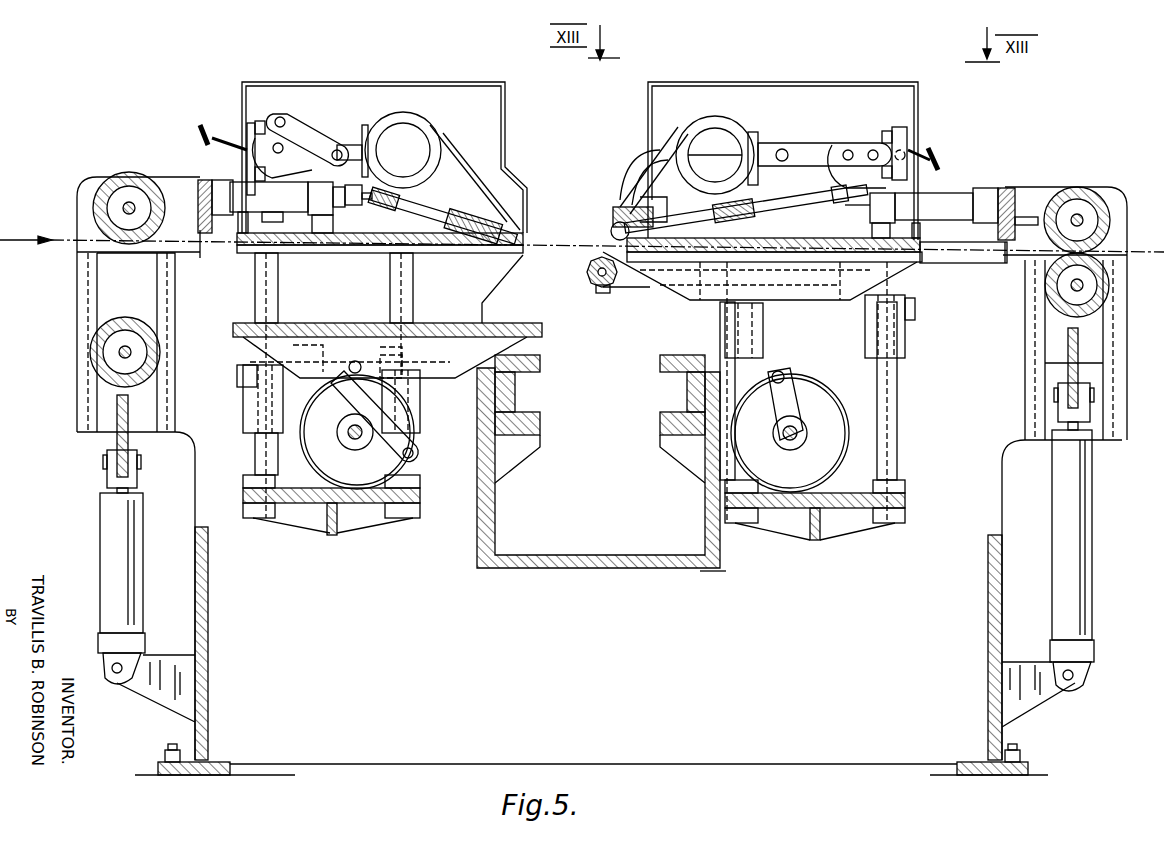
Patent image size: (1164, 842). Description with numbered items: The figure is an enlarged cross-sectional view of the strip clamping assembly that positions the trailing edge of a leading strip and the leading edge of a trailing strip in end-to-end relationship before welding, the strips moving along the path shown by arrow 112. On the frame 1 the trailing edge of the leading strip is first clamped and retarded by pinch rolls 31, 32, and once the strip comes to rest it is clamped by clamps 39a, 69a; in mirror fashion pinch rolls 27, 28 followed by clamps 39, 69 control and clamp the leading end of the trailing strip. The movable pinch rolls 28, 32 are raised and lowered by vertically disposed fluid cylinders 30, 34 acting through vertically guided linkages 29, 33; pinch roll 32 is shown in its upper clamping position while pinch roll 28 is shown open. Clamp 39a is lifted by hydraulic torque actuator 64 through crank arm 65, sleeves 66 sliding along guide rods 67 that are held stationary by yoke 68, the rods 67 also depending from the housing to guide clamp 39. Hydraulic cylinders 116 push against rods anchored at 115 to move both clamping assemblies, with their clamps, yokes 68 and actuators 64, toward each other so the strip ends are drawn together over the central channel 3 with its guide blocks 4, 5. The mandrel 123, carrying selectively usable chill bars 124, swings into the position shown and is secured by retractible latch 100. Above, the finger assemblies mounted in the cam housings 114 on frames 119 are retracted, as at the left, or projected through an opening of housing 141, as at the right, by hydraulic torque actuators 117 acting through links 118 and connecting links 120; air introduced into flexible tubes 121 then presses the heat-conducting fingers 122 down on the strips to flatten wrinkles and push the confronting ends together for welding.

The frame 1 is at (208, 604).
The channel 3 is at (662, 570).
The left guide 4 is at (541, 424).
The right guide 5 is at (660, 424).
The pinch roll 27 is at (133, 175).
The movable pinch roll 28 is at (88, 365).
The linkage 29 is at (107, 440).
The fluid cylinder 30 is at (138, 550).
The pinch roll 31 is at (1080, 188).
The movable pinch roll 32 is at (1110, 285).
The linkage 33 is at (1080, 375).
The fluid cylinder 34 is at (1090, 580).
The clamp 39 is at (428, 323).
The clamp 39a is at (668, 298).
The hydraulic torque actuator 64 is at (300, 452).
The crank arm 65 is at (418, 420).
The sliding sleeve 66 is at (243, 402).
The guide rod 67 is at (255, 290).
The yoke 68 is at (884, 548).
The clamp 69 is at (428, 255).
The clamp 69a is at (697, 250).
The retractible latch 100 is at (520, 380).
The arrow 112 is at (2, 240).
The cam housing 114 is at (284, 72).
The rod anchorage 115 is at (362, 215).
The hydraulic cylinder 116 is at (217, 178).
The hydraulic torque actuator 117 is at (249, 112).
The link 118 is at (312, 120).
The frame 119 is at (420, 118).
The link 120 is at (463, 170).
The flexible tube 121 is at (614, 206).
The finger 122 is at (607, 233).
The mandrel 123 is at (586, 266).
The chill bar 124 is at (580, 280).
The housing 141 is at (526, 176).